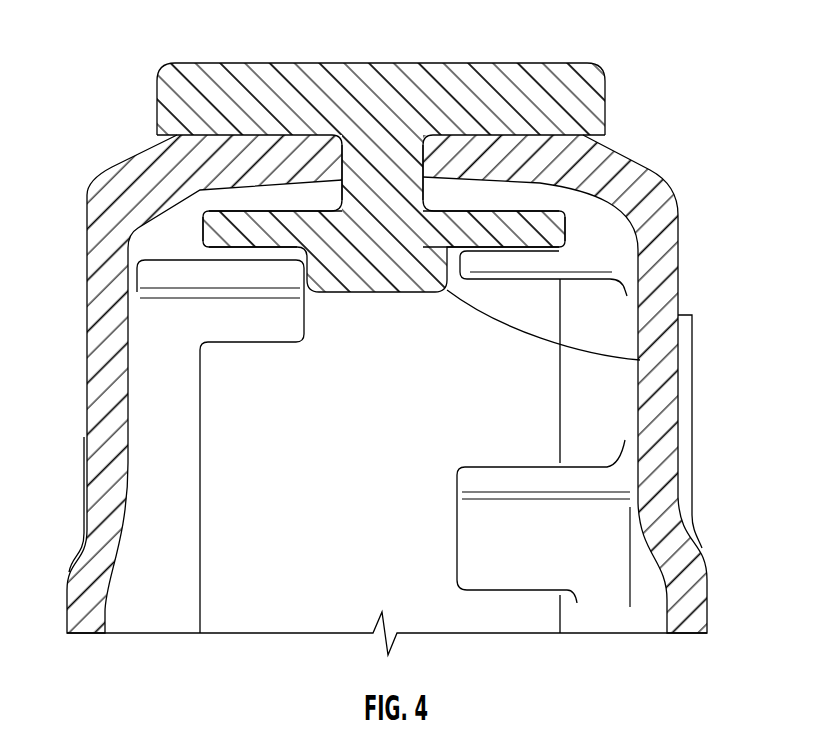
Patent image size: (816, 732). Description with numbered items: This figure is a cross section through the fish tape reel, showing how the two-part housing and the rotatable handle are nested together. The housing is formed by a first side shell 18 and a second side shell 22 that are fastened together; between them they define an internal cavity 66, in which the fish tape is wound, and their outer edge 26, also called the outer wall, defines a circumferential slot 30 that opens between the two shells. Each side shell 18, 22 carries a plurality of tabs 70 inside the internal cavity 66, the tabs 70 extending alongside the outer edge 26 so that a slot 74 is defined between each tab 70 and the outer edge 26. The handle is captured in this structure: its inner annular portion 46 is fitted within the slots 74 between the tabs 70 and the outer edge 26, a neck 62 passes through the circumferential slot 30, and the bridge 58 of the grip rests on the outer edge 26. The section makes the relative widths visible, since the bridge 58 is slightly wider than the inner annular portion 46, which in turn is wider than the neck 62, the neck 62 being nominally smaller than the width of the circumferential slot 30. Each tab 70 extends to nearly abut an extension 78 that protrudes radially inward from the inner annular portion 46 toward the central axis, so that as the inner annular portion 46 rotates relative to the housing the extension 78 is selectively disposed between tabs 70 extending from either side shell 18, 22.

The first side shell 18 is at (90, 450).
The second side shell 22 is at (665, 430).
The outer edge 26 is at (107, 177).
The circumferential slot 30 is at (353, 145).
The inner annular portion 46 is at (527, 230).
The bridge 58 is at (573, 93).
The neck 62 is at (395, 162).
The internal cavity 66 is at (593, 397).
The tab 70 is at (187, 278).
The slot 74 is at (557, 197).
The extension 78 is at (640, 360).